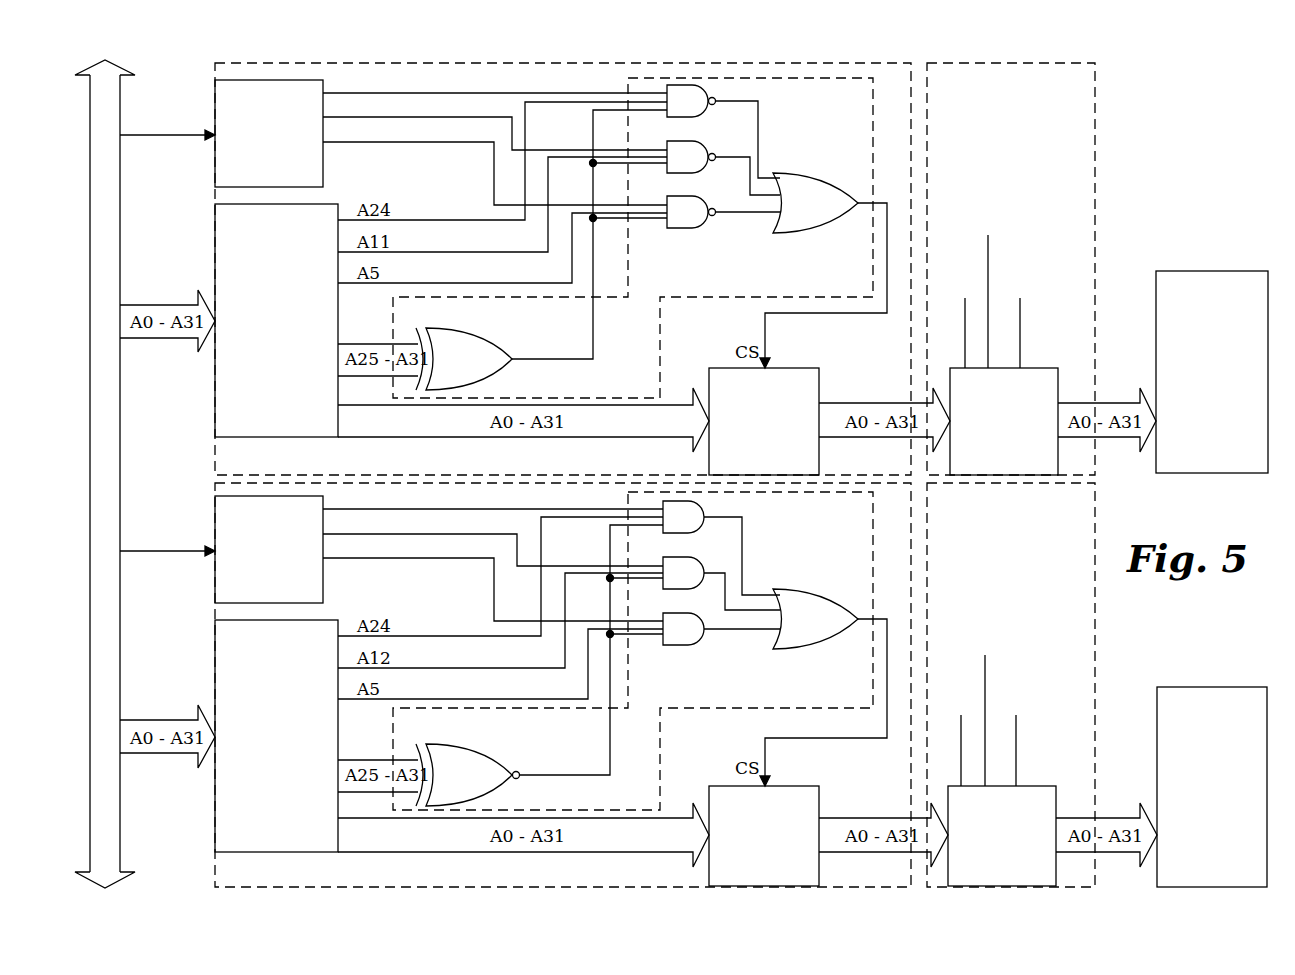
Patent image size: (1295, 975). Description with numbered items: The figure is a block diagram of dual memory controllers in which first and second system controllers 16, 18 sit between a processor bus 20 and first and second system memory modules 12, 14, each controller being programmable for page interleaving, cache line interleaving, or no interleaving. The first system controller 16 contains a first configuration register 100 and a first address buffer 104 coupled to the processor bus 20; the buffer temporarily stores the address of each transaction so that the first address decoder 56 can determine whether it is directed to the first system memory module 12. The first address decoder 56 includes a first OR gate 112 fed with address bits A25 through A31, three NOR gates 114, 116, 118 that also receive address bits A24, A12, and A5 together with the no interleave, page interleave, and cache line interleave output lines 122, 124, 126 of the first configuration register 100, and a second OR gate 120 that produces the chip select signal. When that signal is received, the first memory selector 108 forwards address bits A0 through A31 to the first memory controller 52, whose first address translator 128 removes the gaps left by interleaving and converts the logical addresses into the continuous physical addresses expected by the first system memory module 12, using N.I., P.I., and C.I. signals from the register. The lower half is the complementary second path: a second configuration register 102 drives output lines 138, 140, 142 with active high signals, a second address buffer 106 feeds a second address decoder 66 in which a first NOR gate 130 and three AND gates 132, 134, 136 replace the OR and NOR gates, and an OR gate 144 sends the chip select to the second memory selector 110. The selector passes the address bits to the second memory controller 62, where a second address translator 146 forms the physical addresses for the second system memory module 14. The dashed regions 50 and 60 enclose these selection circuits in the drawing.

The first system memory module 12 is at (1222, 271).
The second system memory module 14 is at (1222, 687).
The first system controller 16 is at (1133, 195).
The second system controller 18 is at (1123, 661).
The processor bus 20 is at (120, 410).
The first memory selection circuit 50 is at (913, 140).
The first memory controller 52 is at (1098, 100).
The first address decoder 56 is at (873, 117).
The second memory selection circuit 60 is at (913, 556).
The second memory controller 62 is at (1098, 522).
The second address decoder 66 is at (873, 531).
The first configuration register 100 is at (321, 186).
The second configuration register 102 is at (321, 602).
The first address buffer 104 is at (340, 326).
The second address buffer 106 is at (340, 740).
The first memory selector 108 is at (797, 371).
The second memory selector 110 is at (797, 789).
The first OR gate 112 is at (470, 345).
The first NOR gate 114 is at (700, 114).
The NOR gate 116 is at (700, 170).
The NOR gate 118 is at (700, 225).
The second OR gate 120 is at (805, 184).
The no interleave output line 122 is at (520, 93).
The page interleave output line 124 is at (530, 150).
The cache line interleave output line 126 is at (494, 190).
The first address translator 128 is at (1032, 371).
The first NOR gate 130 is at (470, 762).
The AND gate 132 is at (696, 534).
The AND gate 134 is at (680, 589).
The AND gate 136 is at (696, 646).
The no interleave output line 138 is at (520, 509).
The page interleave output line 140 is at (530, 566).
The cache line interleave output line 142 is at (494, 607).
The OR gate 144 is at (805, 599).
The second address translator 146 is at (1030, 789).